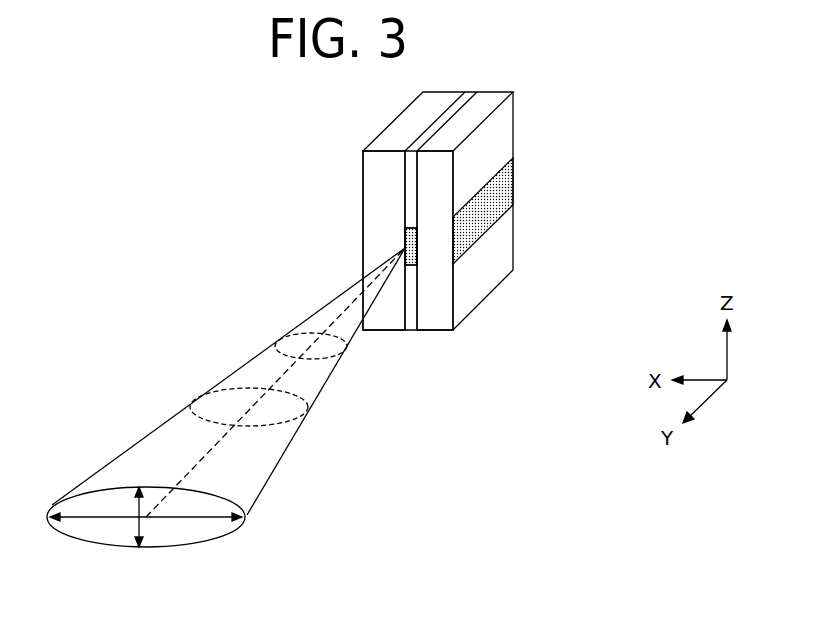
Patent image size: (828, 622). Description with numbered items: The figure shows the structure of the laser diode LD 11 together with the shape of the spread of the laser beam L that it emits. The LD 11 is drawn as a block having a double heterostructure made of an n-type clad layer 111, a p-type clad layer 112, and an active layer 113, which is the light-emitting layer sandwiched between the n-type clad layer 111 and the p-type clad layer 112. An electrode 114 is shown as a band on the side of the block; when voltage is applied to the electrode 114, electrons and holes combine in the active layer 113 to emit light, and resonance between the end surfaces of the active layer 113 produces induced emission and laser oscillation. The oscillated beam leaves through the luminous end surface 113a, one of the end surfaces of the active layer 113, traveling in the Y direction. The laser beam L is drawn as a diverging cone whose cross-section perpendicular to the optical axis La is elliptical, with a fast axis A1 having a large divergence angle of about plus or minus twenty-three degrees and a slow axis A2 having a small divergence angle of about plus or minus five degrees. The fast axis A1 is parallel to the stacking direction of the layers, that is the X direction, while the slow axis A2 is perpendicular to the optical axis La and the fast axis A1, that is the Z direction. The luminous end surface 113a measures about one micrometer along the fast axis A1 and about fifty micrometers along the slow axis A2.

The LD 11 is at (363, 163).
The n-type clad layer 111 is at (382, 240).
The p-type clad layer 112 is at (433, 237).
The active layer 113 is at (413, 262).
The luminous end surface 113a is at (411, 246).
The electrode 114 is at (508, 198).
The laser beam L is at (142, 442).
The optical axis La is at (210, 447).
The fast axis A1 is at (173, 517).
The slow axis A2 is at (133, 525).